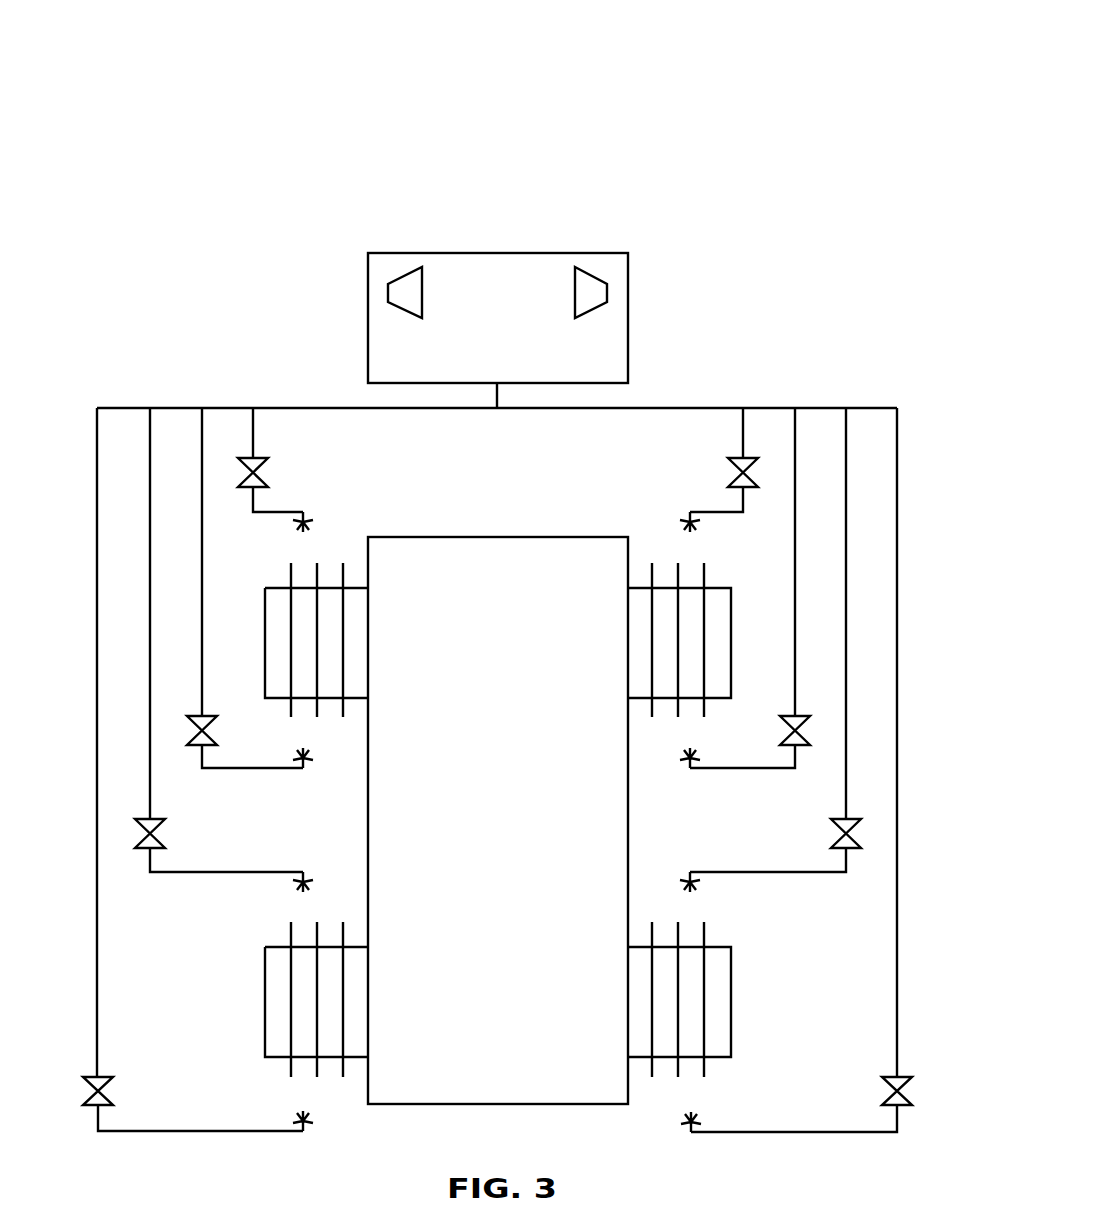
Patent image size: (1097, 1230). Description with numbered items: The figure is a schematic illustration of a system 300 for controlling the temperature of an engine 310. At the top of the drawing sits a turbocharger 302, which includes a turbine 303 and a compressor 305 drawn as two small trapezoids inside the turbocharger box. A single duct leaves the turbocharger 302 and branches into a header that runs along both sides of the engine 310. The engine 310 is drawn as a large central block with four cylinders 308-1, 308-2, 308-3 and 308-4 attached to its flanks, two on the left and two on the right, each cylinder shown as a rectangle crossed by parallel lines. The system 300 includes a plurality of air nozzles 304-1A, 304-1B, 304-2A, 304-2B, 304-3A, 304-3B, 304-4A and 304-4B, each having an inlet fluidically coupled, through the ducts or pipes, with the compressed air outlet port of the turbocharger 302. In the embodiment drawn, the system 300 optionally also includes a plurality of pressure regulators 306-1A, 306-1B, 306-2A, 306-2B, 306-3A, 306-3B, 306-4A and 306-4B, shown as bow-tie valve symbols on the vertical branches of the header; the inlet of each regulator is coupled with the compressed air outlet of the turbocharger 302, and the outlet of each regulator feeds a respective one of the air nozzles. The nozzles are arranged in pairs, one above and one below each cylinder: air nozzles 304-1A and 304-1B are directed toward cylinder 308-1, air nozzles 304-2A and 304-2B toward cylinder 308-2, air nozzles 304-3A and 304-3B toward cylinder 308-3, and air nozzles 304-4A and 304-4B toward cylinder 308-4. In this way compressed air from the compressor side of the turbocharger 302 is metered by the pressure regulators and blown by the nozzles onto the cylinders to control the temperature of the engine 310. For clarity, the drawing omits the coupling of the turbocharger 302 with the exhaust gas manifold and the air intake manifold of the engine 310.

The system 300 is at (542, 92).
The turbocharger 302 is at (630, 293).
The turbine 303 is at (573, 287).
The compressor 305 is at (423, 292).
The engine 310 is at (563, 1105).
The air nozzle 304-1A is at (314, 523).
The air nozzle 304-1B is at (308, 752).
The air nozzle 304-2A is at (296, 890).
The air nozzle 304-2B is at (293, 1112).
The air nozzle 304-3A is at (680, 523).
The air nozzle 304-3B is at (682, 752).
The air nozzle 304-4A is at (700, 890).
The air nozzle 304-4B is at (700, 1112).
The pressure regulator 306-1A is at (267, 470).
The pressure regulator 306-1B is at (197, 748).
The pressure regulator 306-2A is at (146, 850).
The pressure regulator 306-2B is at (94, 1107).
The pressure regulator 306-3A is at (729, 470).
The pressure regulator 306-3B is at (800, 748).
The pressure regulator 306-4A is at (851, 850).
The pressure regulator 306-4B is at (902, 1108).
The cylinder 308-1 is at (263, 608).
The cylinder 308-2 is at (265, 980).
The cylinder 308-3 is at (733, 608).
The cylinder 308-4 is at (733, 982).